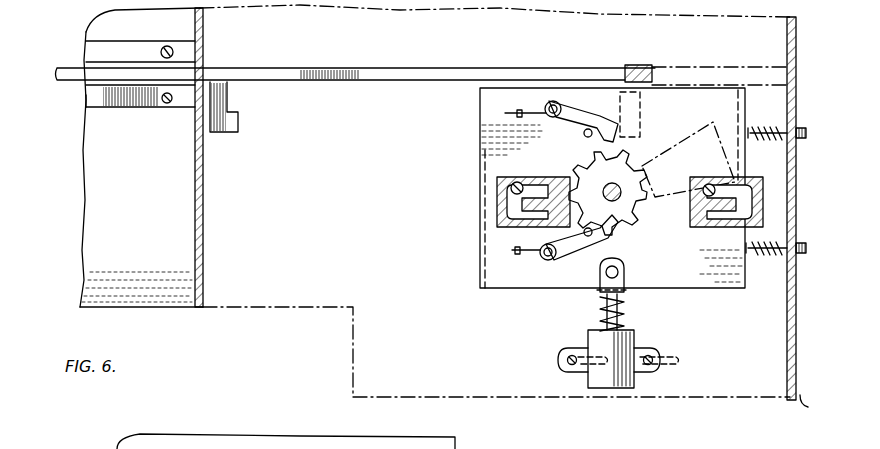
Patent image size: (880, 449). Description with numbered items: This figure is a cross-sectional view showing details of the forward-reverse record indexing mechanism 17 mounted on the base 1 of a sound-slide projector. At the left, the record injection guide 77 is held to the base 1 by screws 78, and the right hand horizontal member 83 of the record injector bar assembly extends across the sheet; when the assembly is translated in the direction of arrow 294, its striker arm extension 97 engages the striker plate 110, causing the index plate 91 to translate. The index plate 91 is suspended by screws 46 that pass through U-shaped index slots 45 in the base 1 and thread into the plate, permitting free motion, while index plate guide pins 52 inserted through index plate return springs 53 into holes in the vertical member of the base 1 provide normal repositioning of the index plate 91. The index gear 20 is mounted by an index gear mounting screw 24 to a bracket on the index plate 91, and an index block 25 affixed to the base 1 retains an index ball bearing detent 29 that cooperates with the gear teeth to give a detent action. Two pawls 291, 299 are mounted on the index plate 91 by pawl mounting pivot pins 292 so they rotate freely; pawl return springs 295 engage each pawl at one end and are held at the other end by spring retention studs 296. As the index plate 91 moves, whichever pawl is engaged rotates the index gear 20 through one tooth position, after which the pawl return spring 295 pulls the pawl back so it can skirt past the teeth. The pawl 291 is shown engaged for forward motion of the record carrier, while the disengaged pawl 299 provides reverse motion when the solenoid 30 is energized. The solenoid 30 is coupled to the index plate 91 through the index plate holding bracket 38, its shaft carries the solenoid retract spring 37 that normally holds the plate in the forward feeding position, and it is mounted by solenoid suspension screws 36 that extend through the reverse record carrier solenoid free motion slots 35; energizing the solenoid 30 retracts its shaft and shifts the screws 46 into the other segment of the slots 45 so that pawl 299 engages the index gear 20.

The base 1 is at (88, 245).
The forward-reverse record indexing mechanism 17 is at (709, 82).
The index gear 20 is at (598, 170).
The index gear mounting screw 24 is at (614, 190).
The index block 25 is at (692, 128).
The index ball bearing detent 29 is at (600, 392).
The solenoid 30 is at (636, 334).
The reverse record carrier solenoid free motion slots 35 is at (575, 372).
The solenoid suspension screws 36 is at (568, 360).
The solenoid retract spring 37 is at (602, 314).
The index plate holding bracket 38 is at (626, 292).
The U-shaped index slots 45 is at (520, 207).
The screws 46 is at (512, 187).
The index plate guide pins 52 is at (804, 128).
The index plate return springs 53 is at (770, 126).
The record injection guide 77 is at (90, 98).
The screws 78 is at (167, 46).
The right hand horizontal member 83 is at (388, 66).
The index plate 91 is at (485, 160).
The striker arm extension 97 is at (219, 134).
The striker plate 110 is at (641, 101).
The pawl 291 is at (612, 232).
The pawl mounting pivot pins 292 is at (560, 107).
The arrow 294 is at (650, 412).
The pawl return springs 295 is at (530, 110).
The spring retention studs 296 is at (510, 114).
The pawl 299 is at (585, 140).